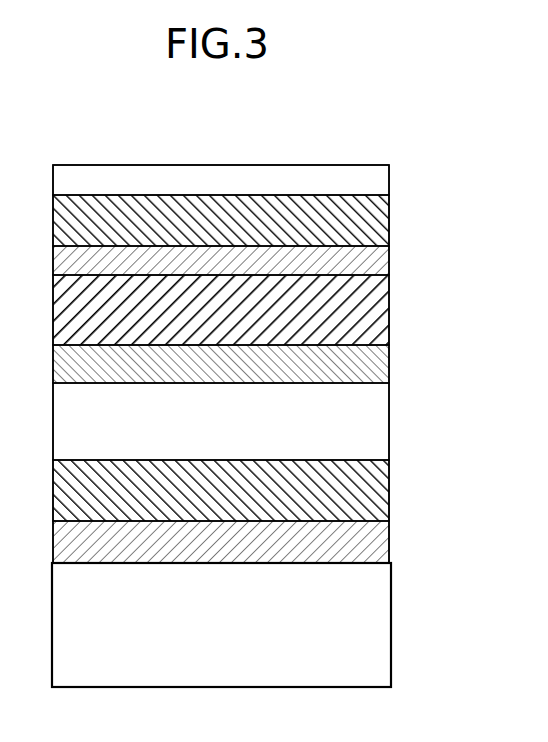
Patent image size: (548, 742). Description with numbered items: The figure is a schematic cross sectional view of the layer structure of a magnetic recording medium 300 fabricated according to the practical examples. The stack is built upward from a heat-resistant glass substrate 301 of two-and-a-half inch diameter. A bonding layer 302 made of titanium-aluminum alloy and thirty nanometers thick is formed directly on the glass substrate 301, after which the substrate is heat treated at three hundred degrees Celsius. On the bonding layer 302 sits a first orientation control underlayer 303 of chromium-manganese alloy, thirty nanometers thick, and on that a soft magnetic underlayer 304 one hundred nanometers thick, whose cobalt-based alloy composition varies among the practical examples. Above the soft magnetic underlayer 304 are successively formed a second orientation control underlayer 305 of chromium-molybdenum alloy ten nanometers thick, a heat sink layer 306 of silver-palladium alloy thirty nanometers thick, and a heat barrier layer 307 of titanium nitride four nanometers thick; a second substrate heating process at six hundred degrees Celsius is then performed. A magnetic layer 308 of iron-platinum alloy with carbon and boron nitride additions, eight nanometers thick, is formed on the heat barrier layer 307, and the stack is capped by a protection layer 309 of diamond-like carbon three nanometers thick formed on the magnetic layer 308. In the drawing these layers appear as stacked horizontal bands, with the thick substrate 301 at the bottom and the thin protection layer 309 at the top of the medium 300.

The magnetic recording medium 300 is at (77, 124).
The heat-resistant glass substrate 301 is at (378, 625).
The bonding layer 302 is at (382, 540).
The first orientation control underlayer 303 is at (382, 490).
The soft magnetic underlayer 304 is at (376, 422).
The second orientation control underlayer 305 is at (380, 364).
The heat sink layer 306 is at (380, 312).
The heat barrier layer 307 is at (378, 259).
The magnetic layer 308 is at (378, 220).
The protection layer 309 is at (376, 181).